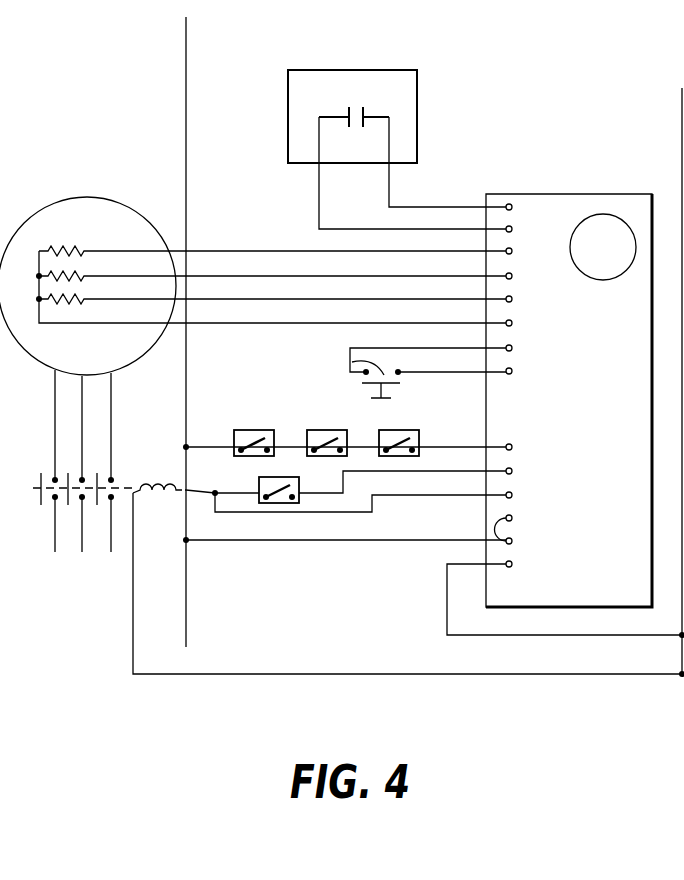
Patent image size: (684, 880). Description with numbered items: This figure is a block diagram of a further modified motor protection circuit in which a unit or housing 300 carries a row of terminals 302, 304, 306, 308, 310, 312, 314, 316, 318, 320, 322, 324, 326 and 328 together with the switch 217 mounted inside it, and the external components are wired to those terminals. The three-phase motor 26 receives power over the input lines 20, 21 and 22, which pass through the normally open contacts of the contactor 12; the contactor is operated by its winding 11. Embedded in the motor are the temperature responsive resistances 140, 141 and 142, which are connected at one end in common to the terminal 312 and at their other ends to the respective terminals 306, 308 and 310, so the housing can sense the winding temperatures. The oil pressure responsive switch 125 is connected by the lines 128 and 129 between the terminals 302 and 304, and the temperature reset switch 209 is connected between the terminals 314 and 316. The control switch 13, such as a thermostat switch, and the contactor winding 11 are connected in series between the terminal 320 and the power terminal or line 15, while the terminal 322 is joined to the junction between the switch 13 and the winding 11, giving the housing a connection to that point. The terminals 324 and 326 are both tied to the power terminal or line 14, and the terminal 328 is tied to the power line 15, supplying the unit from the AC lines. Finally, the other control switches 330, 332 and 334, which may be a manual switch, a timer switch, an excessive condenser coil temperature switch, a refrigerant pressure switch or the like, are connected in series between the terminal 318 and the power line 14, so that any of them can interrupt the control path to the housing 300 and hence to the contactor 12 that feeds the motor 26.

The contactor winding 11 is at (152, 500).
The contactor 12 is at (130, 471).
The control switch 13 is at (300, 484).
The power terminal 14 is at (186, 96).
The power terminal 15 is at (682, 88).
The input line 20 is at (52, 552).
The input line 21 is at (80, 552).
The input line 22 is at (109, 552).
The three-phase motor 26 is at (72, 196).
The oil pressure responsive switch 125 is at (422, 118).
The line 128 is at (443, 206).
The line 129 is at (319, 193).
The temperature responsive resistance 140 is at (62, 245).
The temperature responsive resistance 141 is at (56, 275).
The temperature responsive resistance 142 is at (72, 305).
The temperature reset switch 209 is at (352, 362).
The switch 217 is at (601, 222).
The unit or housing 300 is at (498, 200).
The terminal 302 is at (512, 209).
The terminal 304 is at (512, 231).
The terminal 306 is at (512, 253).
The terminal 308 is at (512, 278).
The terminal 310 is at (512, 301).
The terminal 312 is at (512, 325).
The terminal 314 is at (512, 350).
The terminal 316 is at (512, 373).
The terminal 318 is at (512, 449).
The terminal 320 is at (512, 473).
The terminal 322 is at (512, 497).
The terminal 324 is at (512, 520).
The terminal 326 is at (512, 543).
The terminal 328 is at (512, 566).
The control switch 330 is at (236, 416).
The control switch 332 is at (309, 416).
The control switch 334 is at (381, 416).